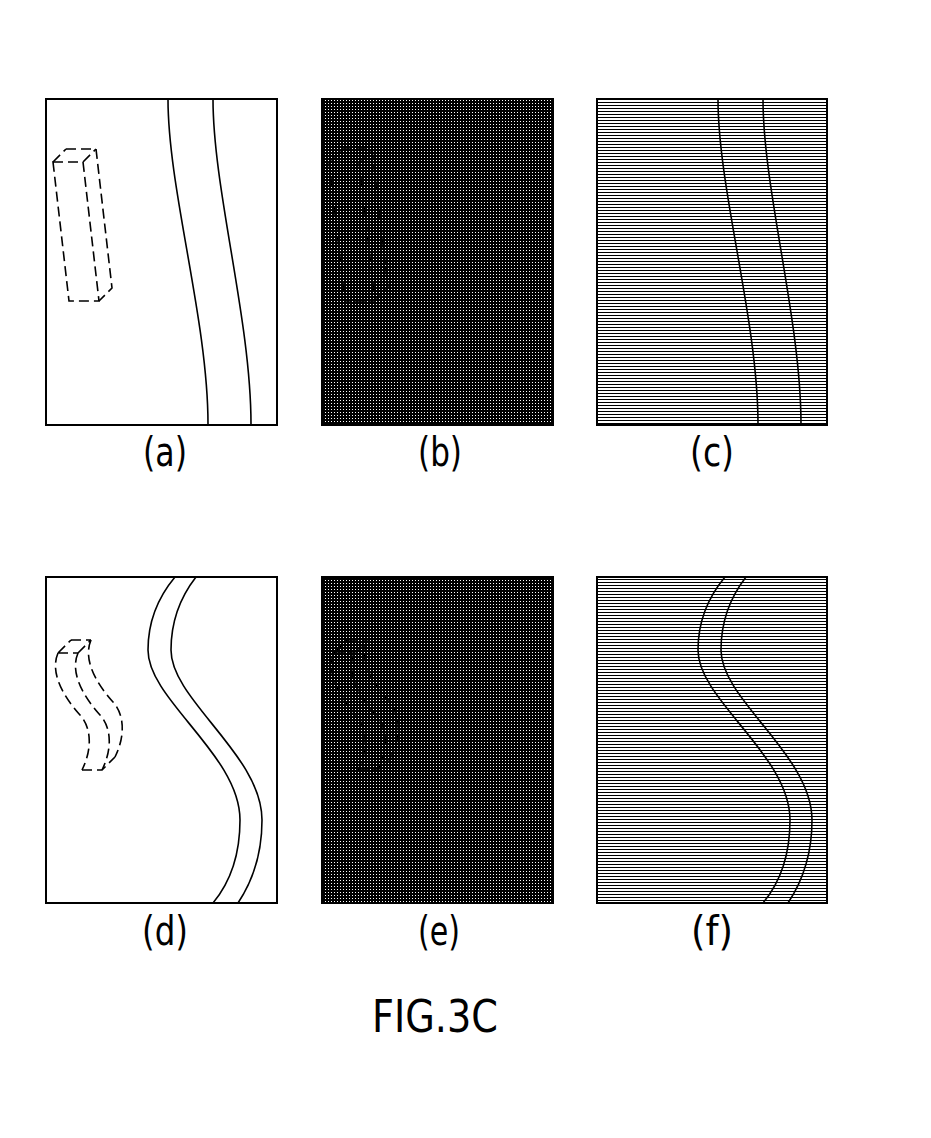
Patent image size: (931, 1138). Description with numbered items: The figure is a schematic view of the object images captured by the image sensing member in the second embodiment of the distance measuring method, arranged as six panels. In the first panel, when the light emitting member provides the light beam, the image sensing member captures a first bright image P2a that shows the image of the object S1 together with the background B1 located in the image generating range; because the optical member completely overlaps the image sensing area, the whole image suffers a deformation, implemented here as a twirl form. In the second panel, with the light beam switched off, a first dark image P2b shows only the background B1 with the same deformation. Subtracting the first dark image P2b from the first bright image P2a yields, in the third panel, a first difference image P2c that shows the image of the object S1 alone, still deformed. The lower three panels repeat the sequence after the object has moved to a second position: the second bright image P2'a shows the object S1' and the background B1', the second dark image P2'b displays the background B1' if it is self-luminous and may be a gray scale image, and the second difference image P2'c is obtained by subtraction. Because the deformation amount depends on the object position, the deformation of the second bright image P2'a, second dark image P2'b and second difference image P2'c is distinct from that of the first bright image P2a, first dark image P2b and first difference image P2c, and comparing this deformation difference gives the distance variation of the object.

The background B1 is at (220, 174).
The first bright image P2a is at (140, 99).
The first dark image P2b is at (434, 99).
The first difference image P2c is at (673, 99).
The object S1 is at (484, 236).
The background B1' is at (226, 647).
The second bright image P2'a is at (161, 710).
The second dark image P2'b is at (437, 710).
The second difference image P2'c is at (712, 711).
The object S1' is at (480, 715).